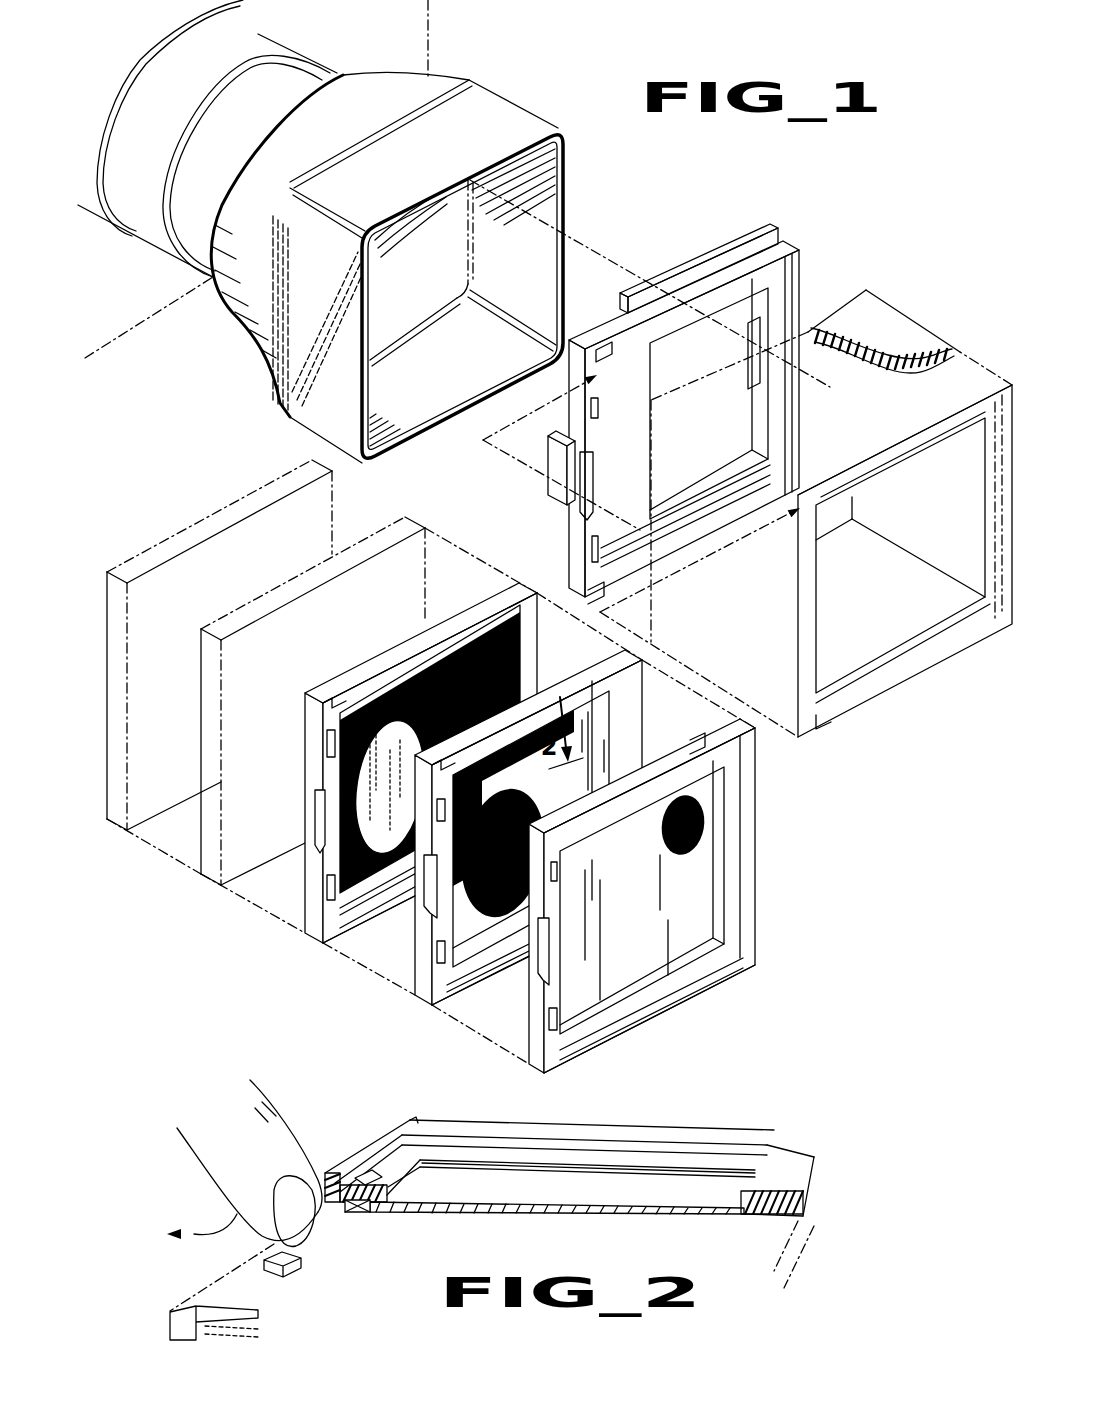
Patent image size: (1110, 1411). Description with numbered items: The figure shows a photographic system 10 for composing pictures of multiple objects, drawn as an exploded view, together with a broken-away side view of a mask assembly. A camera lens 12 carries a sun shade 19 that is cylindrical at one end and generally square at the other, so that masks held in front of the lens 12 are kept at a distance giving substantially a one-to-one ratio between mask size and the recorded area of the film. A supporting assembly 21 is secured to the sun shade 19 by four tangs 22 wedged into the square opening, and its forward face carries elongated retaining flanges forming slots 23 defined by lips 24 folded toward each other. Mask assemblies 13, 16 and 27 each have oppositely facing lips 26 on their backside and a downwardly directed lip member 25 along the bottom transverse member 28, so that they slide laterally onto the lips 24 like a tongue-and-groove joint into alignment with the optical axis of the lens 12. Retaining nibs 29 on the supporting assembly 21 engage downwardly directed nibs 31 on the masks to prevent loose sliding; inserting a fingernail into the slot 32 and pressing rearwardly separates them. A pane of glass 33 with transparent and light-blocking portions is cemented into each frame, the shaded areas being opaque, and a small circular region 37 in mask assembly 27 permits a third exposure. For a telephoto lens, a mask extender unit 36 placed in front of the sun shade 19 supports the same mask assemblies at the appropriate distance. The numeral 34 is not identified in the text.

In FIG. 1, the photographic system 10 is at (855, 153).
In FIG. 1, the lens 12 is at (258, 34).
In FIG. 1, the first mask assembly 13 is at (406, 1009).
In FIG. 1, the mask assembly 16 is at (300, 896).
In FIG. 1, the sun shade 19 is at (527, 97).
In FIG. 1, the supporting assembly 21 is at (790, 252).
In FIG. 1, the tangs 22 is at (681, 288).
In FIG. 1, the slots 23 is at (601, 592).
In FIG. 1, the lips 24 is at (618, 366).
In FIG. 2, the lip member 25 is at (774, 1134).
In FIG. 1, the lips 26 is at (460, 622).
In FIG. 1, the mask assembly 27 is at (517, 1052).
In FIG. 1, the bottom transverse member 28 is at (348, 954).
In FIG. 1, the retaining nibs 29 is at (593, 547).
In FIG. 2, the retaining nibs 29 is at (346, 1214).
In FIG. 2, the nibs 31 is at (282, 1213).
In FIG. 1, the slot 32 is at (320, 832).
In FIG. 2, the pane of glass 33 is at (505, 1193).
In FIG. 2, the channel 34 is at (614, 1172).
In FIG. 1, the mask extender unit 36 is at (895, 335).
In FIG. 1, the small circular region 37 is at (690, 857).